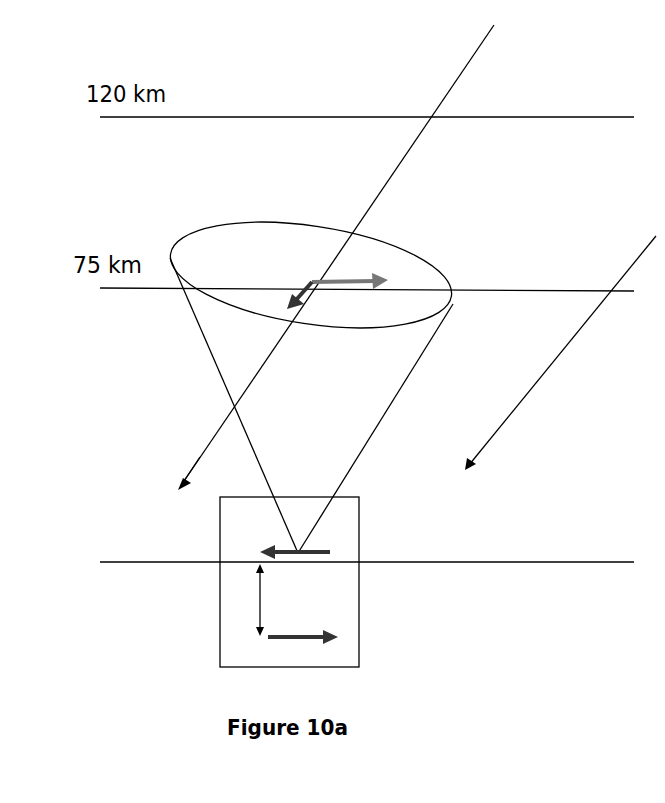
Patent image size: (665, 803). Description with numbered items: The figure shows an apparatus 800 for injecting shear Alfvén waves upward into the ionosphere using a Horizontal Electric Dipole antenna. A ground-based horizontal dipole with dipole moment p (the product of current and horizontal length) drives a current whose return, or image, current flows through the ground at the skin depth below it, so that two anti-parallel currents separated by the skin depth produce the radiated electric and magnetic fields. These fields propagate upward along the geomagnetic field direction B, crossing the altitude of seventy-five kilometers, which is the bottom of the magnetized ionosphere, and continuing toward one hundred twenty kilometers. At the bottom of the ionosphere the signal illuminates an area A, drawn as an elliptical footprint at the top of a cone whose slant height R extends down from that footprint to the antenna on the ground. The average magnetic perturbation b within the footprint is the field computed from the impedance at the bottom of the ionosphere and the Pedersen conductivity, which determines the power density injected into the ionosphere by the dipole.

The apparatus 800 is at (506, 75).
The geomagnetic field direction B is at (193, 475).
The heated area at 75 km A is at (310, 275).
The distance from heated region to ground R is at (375, 428).
The average magnetic field perturbation b is at (342, 279).
The ground current dipole p=JL p is at (289, 582).